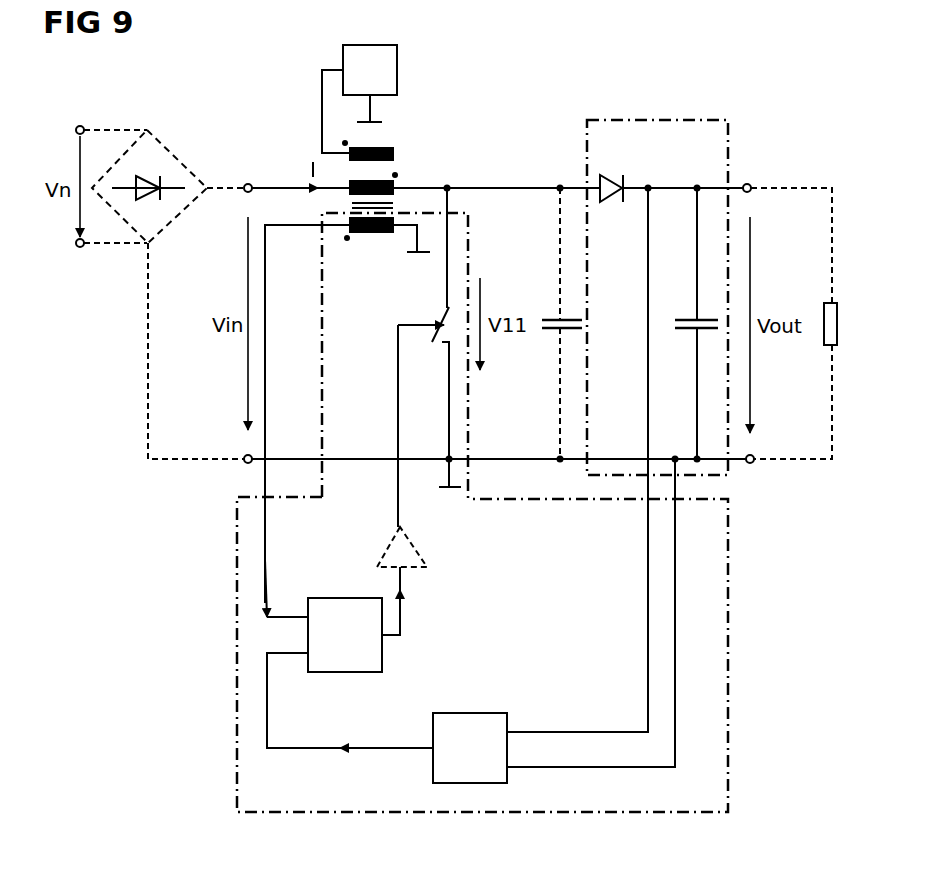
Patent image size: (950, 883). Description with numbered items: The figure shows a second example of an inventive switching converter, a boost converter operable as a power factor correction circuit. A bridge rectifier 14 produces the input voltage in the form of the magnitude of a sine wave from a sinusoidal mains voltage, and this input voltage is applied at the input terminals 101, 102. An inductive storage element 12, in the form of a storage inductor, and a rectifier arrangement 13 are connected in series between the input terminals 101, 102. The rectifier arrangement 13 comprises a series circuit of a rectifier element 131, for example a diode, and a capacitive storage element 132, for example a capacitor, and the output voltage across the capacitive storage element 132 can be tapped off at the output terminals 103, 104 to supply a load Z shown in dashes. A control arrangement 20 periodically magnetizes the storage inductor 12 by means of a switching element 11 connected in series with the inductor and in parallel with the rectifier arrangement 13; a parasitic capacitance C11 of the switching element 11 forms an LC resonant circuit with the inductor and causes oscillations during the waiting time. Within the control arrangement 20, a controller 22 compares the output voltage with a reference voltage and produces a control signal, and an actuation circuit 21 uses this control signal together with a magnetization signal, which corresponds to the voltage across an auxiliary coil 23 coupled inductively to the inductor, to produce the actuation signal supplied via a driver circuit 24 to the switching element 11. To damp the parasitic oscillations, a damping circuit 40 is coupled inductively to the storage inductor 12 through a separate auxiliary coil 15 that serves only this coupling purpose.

The switching element 11 is at (445, 313).
The inductive storage element 12 is at (350, 188).
The rectifier arrangement 13 is at (643, 120).
The bridge rectifier 14 is at (173, 220).
The separate auxiliary coil 15 is at (393, 155).
The control arrangement 20 is at (552, 813).
The actuation circuit 21 is at (347, 673).
The controller 22 is at (470, 713).
The auxiliary coil 23 is at (372, 233).
The driver circuit 24 is at (383, 555).
The damping circuit 40 is at (397, 70).
The input terminal 101 is at (247, 183).
The input terminal 102 is at (247, 455).
The output terminal 103 is at (747, 183).
The output terminal 104 is at (752, 464).
The rectifier element 131 is at (620, 182).
The capacitive storage element 132 is at (687, 317).
The parasitic capacitance C11 is at (553, 318).
The load Z is at (838, 323).